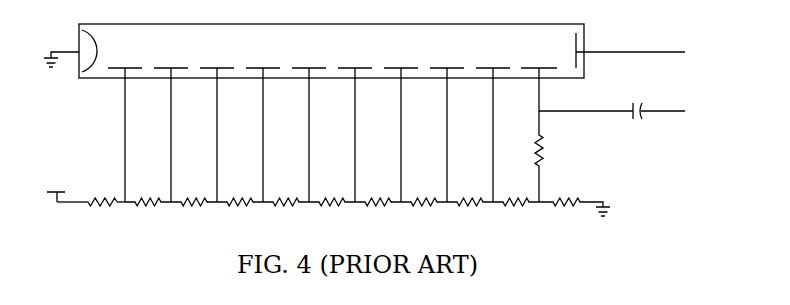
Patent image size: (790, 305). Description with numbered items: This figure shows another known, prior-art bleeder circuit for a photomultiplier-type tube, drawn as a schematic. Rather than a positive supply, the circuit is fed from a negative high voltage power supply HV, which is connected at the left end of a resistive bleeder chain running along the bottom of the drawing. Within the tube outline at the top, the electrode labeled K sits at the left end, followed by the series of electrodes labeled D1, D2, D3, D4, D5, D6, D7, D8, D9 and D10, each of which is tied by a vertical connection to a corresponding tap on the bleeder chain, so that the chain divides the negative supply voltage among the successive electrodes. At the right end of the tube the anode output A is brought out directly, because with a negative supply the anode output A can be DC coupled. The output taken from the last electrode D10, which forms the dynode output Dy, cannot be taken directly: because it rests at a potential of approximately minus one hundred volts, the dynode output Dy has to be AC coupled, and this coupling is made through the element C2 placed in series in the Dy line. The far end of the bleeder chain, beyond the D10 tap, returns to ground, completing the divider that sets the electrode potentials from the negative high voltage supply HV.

The photocathode K is at (70, 51).
The dynode 1 D1 is at (125, 125).
The dynode 2 D2 is at (171, 125).
The dynode 3 D3 is at (217, 125).
The dynode 4 D4 is at (263, 125).
The dynode 5 D5 is at (309, 125).
The dynode 6 D6 is at (355, 125).
The dynode 7 D7 is at (401, 125).
The dynode 8 D8 is at (447, 125).
The dynode 9 D9 is at (493, 125).
The dynode 10 D10 is at (539, 121).
The anode output A is at (625, 50).
The coupling capacitor C2 is at (633, 100).
The dynode output Dy is at (613, 101).
The negative high voltage power supply HV is at (51, 187).